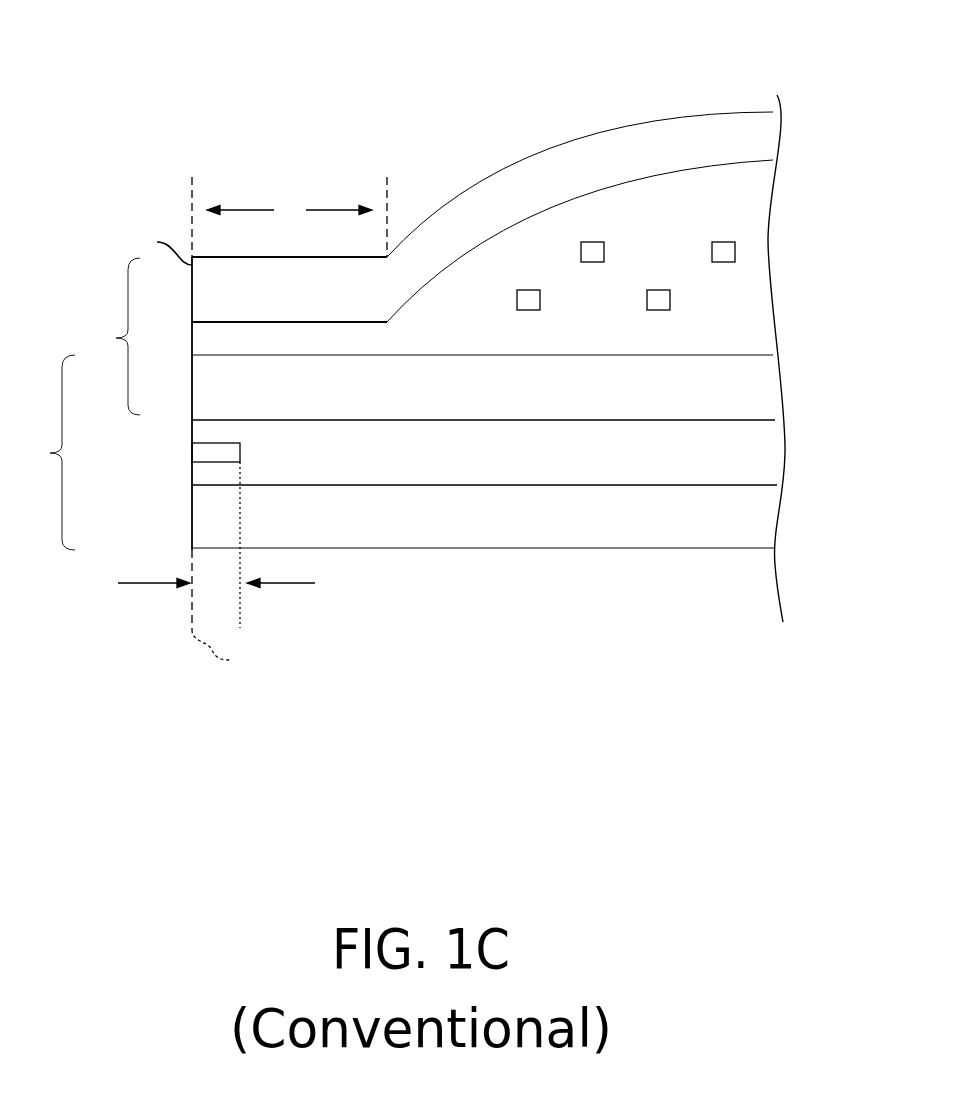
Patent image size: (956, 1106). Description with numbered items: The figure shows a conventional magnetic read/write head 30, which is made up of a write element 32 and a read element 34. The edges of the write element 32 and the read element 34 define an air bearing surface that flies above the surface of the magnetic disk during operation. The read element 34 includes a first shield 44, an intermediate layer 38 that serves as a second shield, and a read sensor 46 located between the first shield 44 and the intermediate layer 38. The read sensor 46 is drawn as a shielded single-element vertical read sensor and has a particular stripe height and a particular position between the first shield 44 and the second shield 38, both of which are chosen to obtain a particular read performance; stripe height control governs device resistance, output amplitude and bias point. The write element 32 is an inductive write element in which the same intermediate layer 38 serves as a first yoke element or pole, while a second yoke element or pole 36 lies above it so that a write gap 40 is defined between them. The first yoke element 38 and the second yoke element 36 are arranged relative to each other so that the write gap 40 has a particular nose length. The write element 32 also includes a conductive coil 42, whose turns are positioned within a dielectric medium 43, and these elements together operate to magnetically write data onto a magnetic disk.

The magnetic read/write head 30 is at (484, 70).
The write element 32 is at (111, 336).
The read element 34 is at (46, 452).
The second yoke element or pole 36 is at (192, 178).
The intermediate layer 38 is at (757, 398).
The write gap 40 is at (207, 348).
The conductive coil 42 is at (735, 245).
The dielectric medium 43 is at (760, 318).
The first shield 44 is at (578, 533).
The read sensor 46 is at (192, 455).